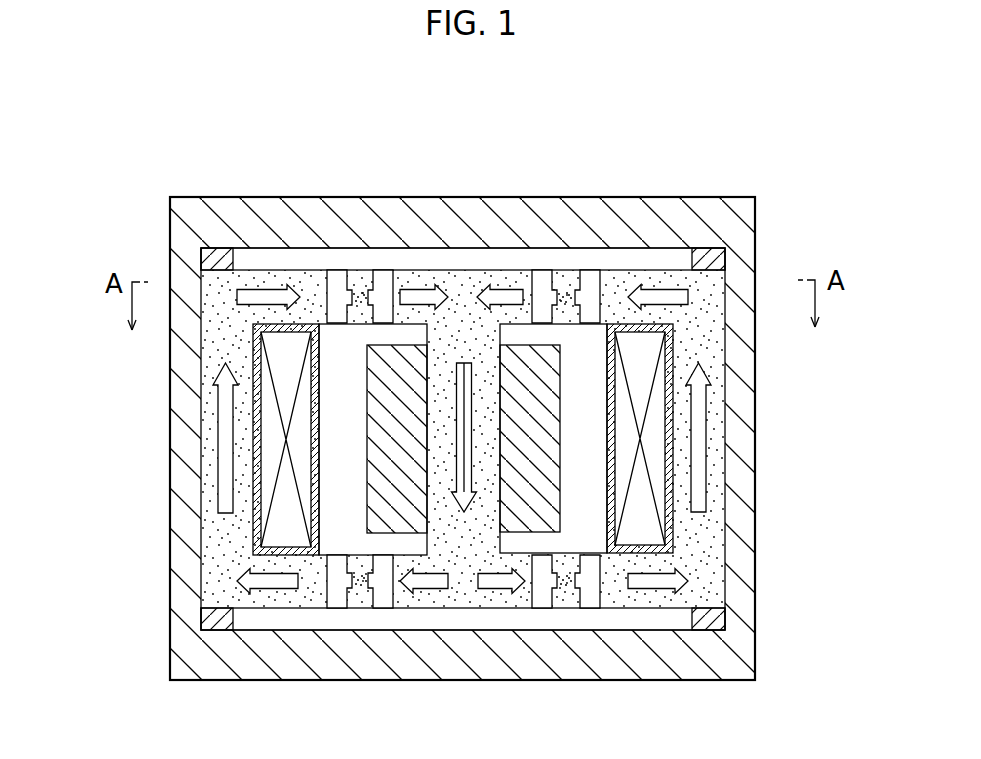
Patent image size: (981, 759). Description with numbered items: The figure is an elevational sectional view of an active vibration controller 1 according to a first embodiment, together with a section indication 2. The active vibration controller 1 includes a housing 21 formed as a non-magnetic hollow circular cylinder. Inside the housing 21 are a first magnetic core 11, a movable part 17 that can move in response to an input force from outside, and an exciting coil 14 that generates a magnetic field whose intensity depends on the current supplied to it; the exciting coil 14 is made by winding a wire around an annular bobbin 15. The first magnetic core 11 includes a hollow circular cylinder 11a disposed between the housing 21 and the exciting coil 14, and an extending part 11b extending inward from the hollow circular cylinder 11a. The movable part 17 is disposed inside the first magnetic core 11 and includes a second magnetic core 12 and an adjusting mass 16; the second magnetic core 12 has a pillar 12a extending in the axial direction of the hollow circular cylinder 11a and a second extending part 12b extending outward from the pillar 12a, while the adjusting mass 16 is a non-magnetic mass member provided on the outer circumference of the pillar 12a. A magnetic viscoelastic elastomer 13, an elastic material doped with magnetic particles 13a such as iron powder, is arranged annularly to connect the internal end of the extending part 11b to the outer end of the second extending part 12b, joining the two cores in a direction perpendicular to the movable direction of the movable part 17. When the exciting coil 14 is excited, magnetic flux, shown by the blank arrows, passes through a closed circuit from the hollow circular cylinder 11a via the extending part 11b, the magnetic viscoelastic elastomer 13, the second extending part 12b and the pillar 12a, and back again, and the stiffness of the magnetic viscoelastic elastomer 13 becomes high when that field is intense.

The active vibration controller 1 is at (595, 113).
The case 2 is at (805, 260).
The first magnetic core 11 is at (813, 142).
The hollow circular cylinder 11a is at (700, 350).
The extending part 11b is at (655, 280).
The second magnetic core 12 is at (557, 145).
The pillar 12a is at (460, 343).
The second extending part 12b is at (505, 280).
The magnetic viscoelastic elastomer 13 is at (562, 608).
The magnetic particles 13a is at (568, 588).
The exciting coil 14 is at (647, 413).
The bobbin 15 is at (652, 553).
The adjusting mass 16 is at (545, 440).
The movable part 17 is at (418, 266).
The housing 21 is at (277, 217).